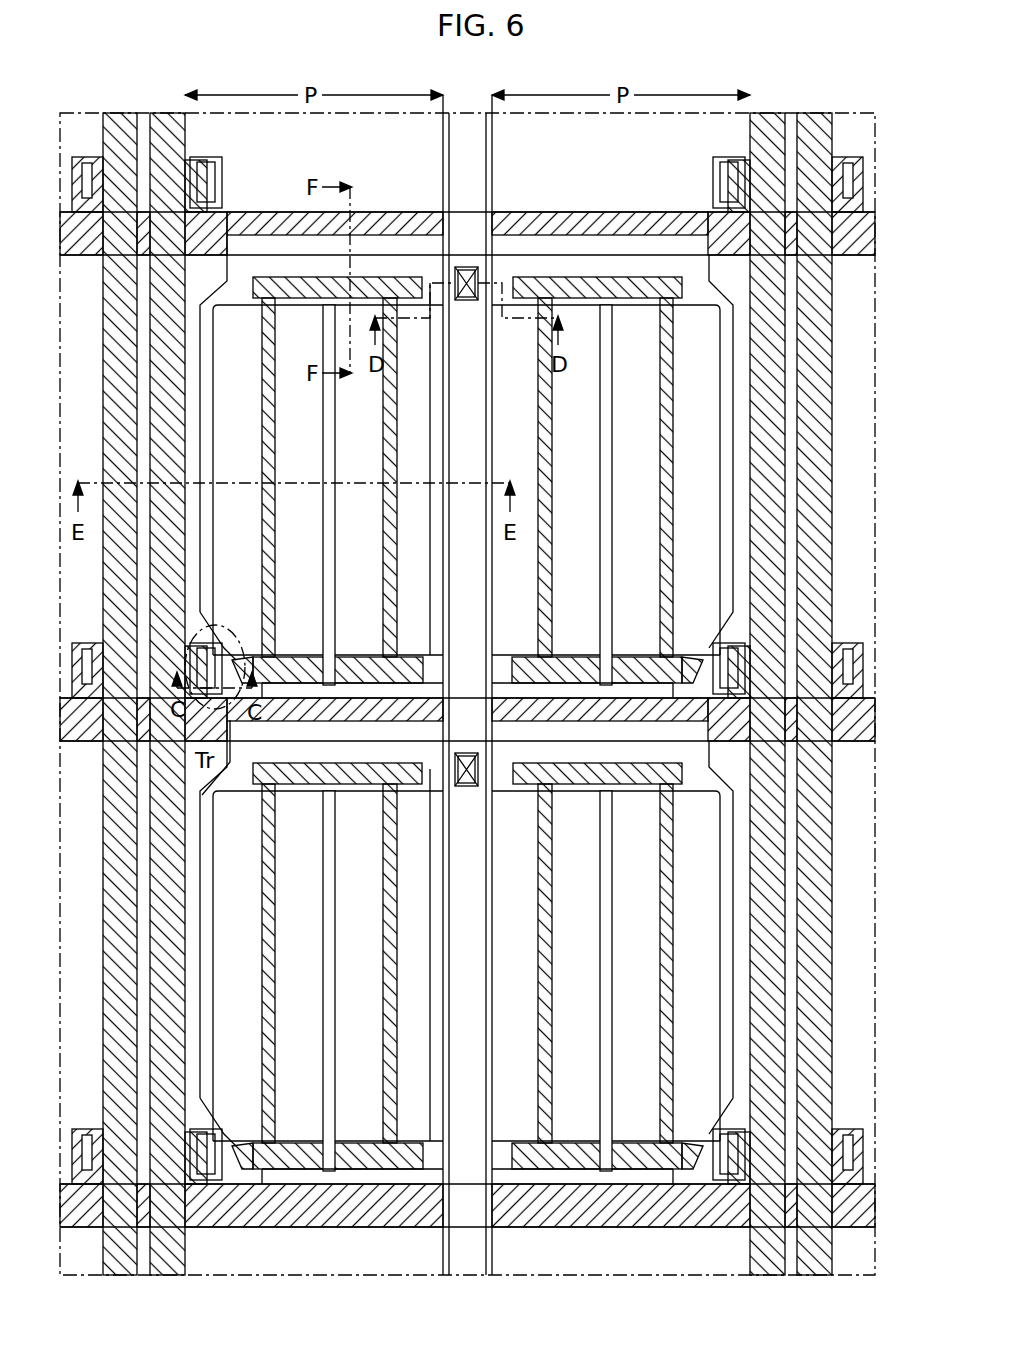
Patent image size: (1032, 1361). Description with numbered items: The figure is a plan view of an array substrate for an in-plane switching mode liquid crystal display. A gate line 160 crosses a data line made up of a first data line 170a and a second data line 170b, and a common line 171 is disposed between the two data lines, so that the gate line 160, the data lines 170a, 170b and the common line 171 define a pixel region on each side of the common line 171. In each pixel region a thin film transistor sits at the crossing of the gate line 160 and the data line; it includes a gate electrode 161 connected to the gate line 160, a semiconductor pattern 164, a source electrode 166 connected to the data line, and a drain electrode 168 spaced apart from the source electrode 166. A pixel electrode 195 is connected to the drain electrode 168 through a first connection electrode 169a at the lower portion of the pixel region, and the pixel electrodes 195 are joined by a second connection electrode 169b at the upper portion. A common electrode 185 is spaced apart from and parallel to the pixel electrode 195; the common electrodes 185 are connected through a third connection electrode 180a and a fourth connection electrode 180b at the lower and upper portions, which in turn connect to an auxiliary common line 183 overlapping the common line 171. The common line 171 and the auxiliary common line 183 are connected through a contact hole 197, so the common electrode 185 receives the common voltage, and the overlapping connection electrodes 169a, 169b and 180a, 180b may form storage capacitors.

The gate line 160 is at (250, 212).
The gate electrode 161 is at (188, 746).
The semiconductor pattern 164 is at (225, 710).
The source electrode 166 is at (218, 640).
The drain electrode 168 is at (228, 650).
The first connection electrode 169a is at (412, 683).
The second connection electrode 169b is at (280, 287).
The first data line 170a is at (168, 123).
The second data line 170b is at (770, 125).
The common line 171 is at (470, 157).
The third connection electrode 180a is at (350, 687).
The fourth connection electrode 180b is at (388, 243).
The auxiliary common line 183 is at (492, 132).
The common electrode 185 is at (200, 562).
The pixel electrode 195 is at (268, 519).
The contact hole 197 is at (468, 266).